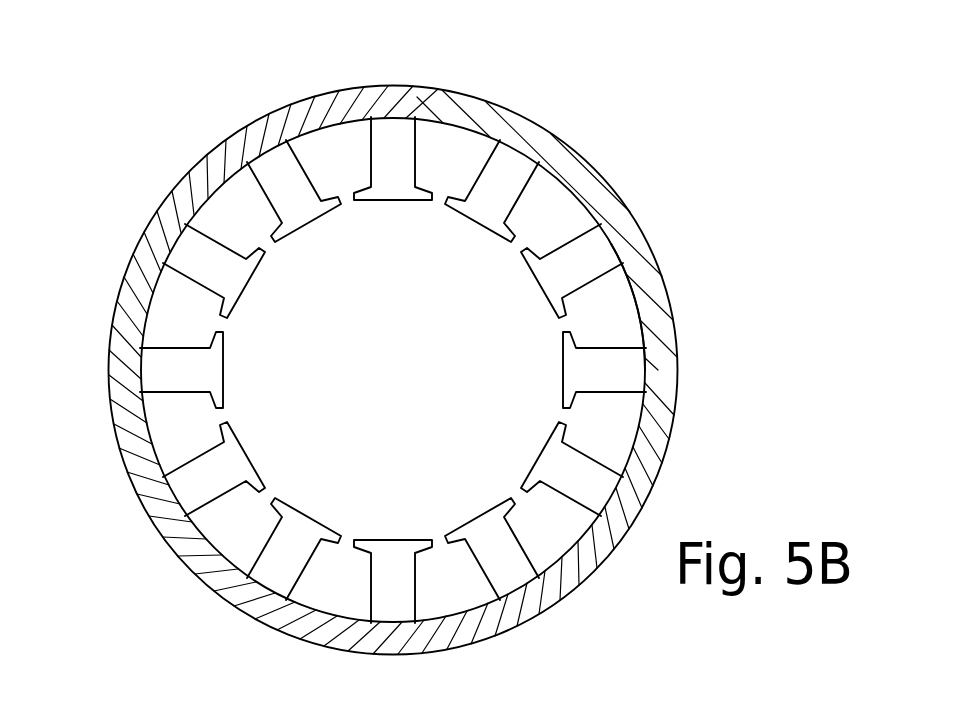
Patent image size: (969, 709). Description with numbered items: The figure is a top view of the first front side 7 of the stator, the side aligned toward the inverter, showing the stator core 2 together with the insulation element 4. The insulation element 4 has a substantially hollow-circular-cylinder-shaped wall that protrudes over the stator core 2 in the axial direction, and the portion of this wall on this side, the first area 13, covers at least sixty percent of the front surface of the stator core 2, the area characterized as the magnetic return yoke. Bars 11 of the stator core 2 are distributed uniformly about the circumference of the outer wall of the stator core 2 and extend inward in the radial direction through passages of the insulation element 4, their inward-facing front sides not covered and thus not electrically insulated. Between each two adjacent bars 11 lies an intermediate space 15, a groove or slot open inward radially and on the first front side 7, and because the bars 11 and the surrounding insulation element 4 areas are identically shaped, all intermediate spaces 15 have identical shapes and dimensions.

The stator core 2 is at (160, 361).
The insulation element 4 is at (233, 143).
The first area 13 is at (393, 370).
The first front side 7 is at (611, 124).
The bars 11 is at (599, 251).
The intermediate space 15 is at (617, 308).